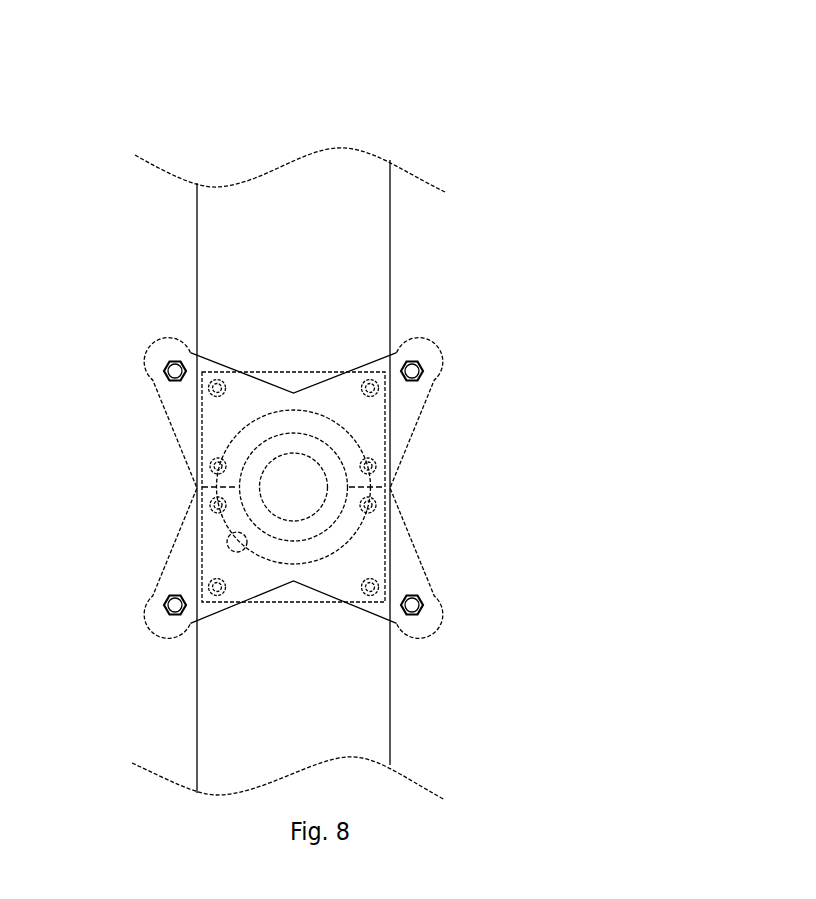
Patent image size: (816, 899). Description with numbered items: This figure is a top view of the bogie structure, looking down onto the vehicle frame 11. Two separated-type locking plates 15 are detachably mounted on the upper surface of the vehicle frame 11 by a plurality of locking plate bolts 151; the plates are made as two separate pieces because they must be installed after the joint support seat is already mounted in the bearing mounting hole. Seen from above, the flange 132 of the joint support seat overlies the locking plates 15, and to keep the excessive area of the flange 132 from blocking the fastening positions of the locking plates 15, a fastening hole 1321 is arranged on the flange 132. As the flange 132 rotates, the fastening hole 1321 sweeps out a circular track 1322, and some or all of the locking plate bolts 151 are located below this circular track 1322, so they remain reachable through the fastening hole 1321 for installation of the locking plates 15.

The vehicle frame 11 is at (302, 255).
The locking plate 15 is at (296, 378).
The flange 132 is at (402, 410).
The fastening hole 1321 is at (228, 539).
The circular track 1322 is at (340, 545).
The locking plate bolt 151 is at (366, 381).